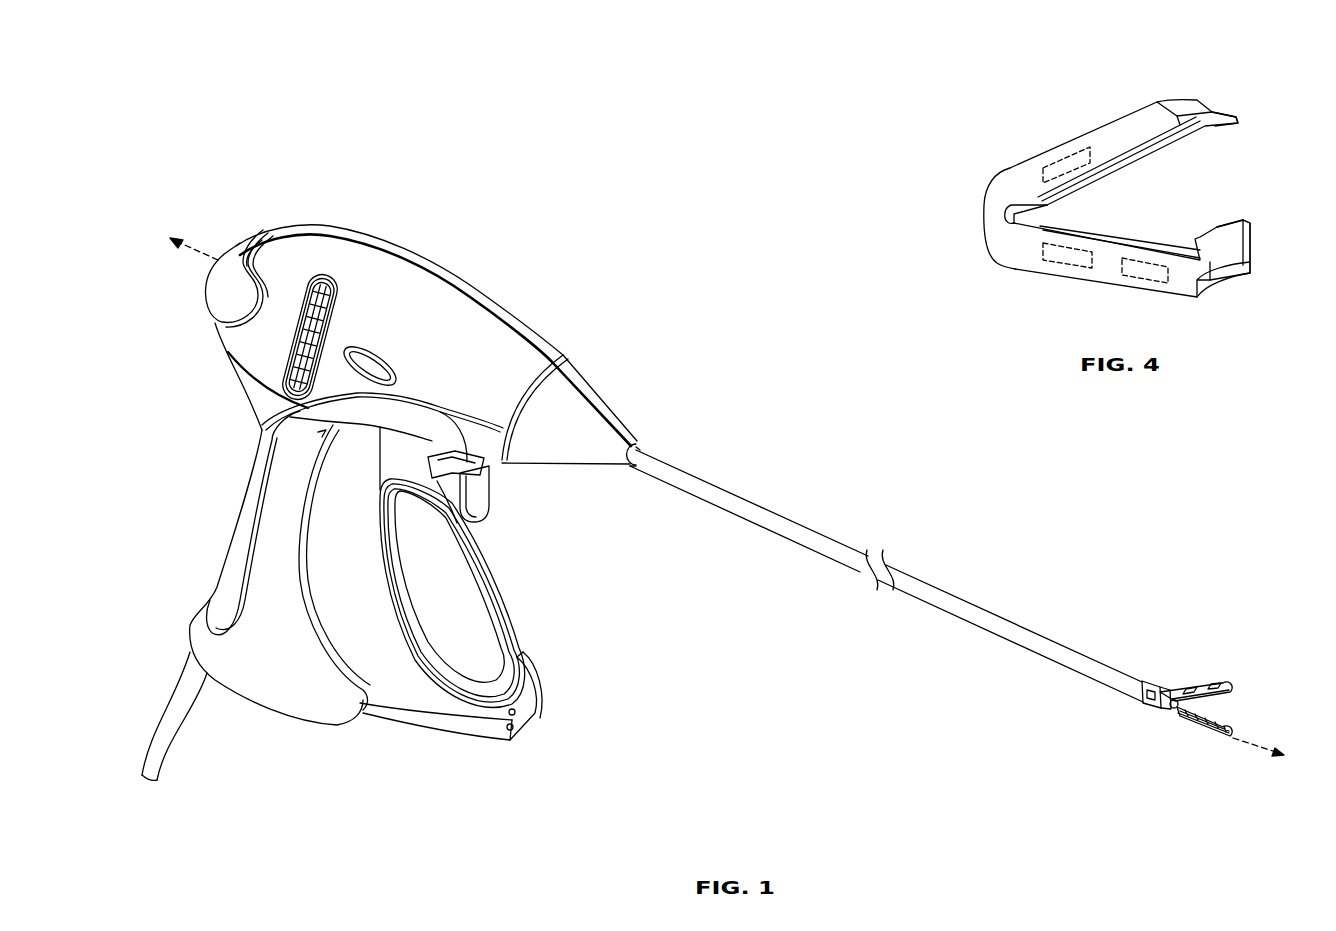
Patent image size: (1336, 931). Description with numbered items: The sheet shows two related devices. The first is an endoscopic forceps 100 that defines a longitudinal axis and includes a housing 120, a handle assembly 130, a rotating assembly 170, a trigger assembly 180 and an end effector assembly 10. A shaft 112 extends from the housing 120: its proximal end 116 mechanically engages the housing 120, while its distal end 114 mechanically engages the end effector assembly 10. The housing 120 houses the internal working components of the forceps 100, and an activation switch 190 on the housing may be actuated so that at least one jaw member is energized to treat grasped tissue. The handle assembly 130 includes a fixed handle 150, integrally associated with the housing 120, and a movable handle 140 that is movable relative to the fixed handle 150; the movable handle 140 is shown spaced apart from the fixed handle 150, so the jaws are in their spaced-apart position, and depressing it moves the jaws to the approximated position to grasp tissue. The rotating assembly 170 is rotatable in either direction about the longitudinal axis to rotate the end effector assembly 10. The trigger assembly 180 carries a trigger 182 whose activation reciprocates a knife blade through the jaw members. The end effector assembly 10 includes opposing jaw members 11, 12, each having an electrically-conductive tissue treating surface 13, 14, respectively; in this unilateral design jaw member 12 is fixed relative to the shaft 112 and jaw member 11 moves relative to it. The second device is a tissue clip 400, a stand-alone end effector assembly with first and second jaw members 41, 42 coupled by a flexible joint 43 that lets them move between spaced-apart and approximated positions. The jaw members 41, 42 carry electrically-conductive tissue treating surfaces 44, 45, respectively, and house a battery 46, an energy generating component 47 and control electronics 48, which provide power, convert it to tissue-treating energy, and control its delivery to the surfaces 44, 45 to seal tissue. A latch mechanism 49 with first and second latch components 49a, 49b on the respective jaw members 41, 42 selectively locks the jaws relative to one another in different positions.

In FIG. 1, the endoscopic forceps 100 is at (735, 402).
In FIG. 1, the housing 120 is at (428, 285).
In FIG. 1, the activation switch 190 is at (218, 295).
In FIG. 1, the rotating assembly 170 is at (307, 290).
In FIG. 1, the fixed handle 150 is at (223, 587).
In FIG. 1, the movable handle 140 is at (507, 603).
In FIG. 1, the trigger assembly 180 is at (498, 478).
In FIG. 1, the trigger 182 is at (482, 500).
In FIG. 1, the handle assembly 130 is at (427, 755).
In FIG. 1, the shaft 112 is at (917, 583).
In FIG. 1, the proximal end 116 is at (640, 457).
In FIG. 1, the end effector assembly 10 is at (1160, 598).
In FIG. 1, the distal end 114 is at (1143, 686).
In FIG. 1, the jaw member 11 is at (1193, 684).
In FIG. 1, the jaw member 12 is at (1201, 739).
In FIG. 1, the tissue treating surface 13 is at (1230, 691).
In FIG. 1, the tissue treating surface 14 is at (1230, 724).
In FIG. 4, the tissue clip 400 is at (1014, 85).
In FIG. 4, the first jaw member 41 is at (1173, 98).
In FIG. 4, the second jaw member 42 is at (1238, 300).
In FIG. 4, the flexible joint 43 is at (990, 220).
In FIG. 4, the tissue treating surface 44 is at (1187, 147).
In FIG. 4, the tissue treating surface 45 is at (1127, 233).
In FIG. 4, the battery 46 is at (1065, 258).
In FIG. 4, the energy generating component 47 is at (1145, 273).
In FIG. 4, the control electronics 48 is at (1063, 163).
In FIG. 4, the latch mechanism 49 is at (1243, 211).
In FIG. 4, the first latch component 49a is at (1230, 120).
In FIG. 4, the second latch component 49b is at (1243, 240).